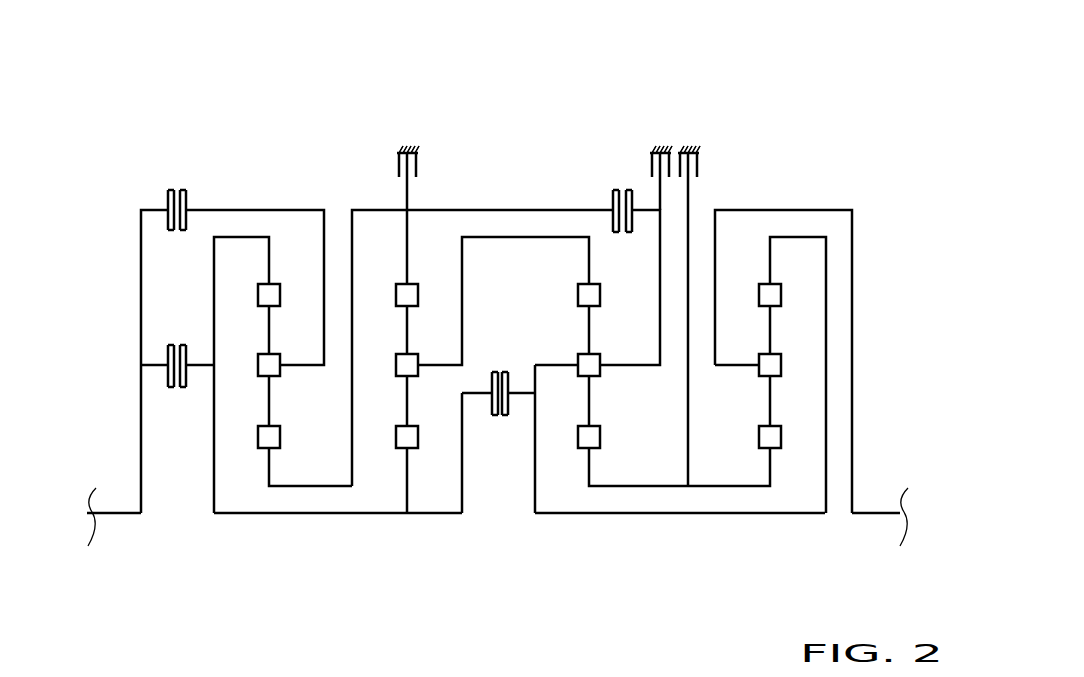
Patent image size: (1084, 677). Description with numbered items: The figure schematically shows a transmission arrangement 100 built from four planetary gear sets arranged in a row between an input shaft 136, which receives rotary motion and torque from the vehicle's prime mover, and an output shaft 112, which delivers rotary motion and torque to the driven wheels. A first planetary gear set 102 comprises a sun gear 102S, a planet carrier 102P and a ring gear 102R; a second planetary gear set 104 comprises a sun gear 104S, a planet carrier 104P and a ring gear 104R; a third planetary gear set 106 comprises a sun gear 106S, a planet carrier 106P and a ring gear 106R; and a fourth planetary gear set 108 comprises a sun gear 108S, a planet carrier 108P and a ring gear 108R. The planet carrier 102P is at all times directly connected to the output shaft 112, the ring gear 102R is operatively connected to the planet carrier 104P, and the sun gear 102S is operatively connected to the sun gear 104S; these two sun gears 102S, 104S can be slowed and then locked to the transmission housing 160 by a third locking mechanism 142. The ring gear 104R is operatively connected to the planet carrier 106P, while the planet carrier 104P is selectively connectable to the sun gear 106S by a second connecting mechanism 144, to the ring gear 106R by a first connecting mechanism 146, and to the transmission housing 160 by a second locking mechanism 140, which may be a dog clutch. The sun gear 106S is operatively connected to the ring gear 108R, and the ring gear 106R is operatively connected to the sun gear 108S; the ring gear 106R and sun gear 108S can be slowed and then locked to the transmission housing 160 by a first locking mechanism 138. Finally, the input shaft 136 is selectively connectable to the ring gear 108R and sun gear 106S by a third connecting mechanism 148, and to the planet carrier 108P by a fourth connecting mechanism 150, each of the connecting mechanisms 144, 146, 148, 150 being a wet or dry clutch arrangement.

The transmission arrangement 100 is at (502, 318).
The first planetary gear set 102 is at (825, 361).
The ring gear 102R is at (782, 296).
The planet carrier 102P is at (782, 370).
The sun gear 102S is at (782, 438).
The second planetary gear set 104 is at (665, 384).
The ring gear 104R is at (578, 295).
The planet carrier 104P is at (578, 366).
The sun gear 104S is at (600, 440).
The third planetary gear set 106 is at (413, 368).
The ring gear 106R is at (418, 296).
The planet carrier 106P is at (396, 366).
The sun gear 106S is at (418, 440).
The fourth planetary gear set 108 is at (205, 382).
The ring gear 108R is at (258, 296).
The planet carrier 108P is at (258, 366).
The sun gear 108S is at (281, 440).
The output shaft 112 is at (875, 514).
The input shaft 136 is at (120, 514).
The first locking mechanism 138 is at (418, 162).
The second locking mechanism 140 is at (648, 160).
The third locking mechanism 142 is at (700, 160).
The second connecting mechanism 144 is at (510, 437).
The first connecting mechanism 146 is at (609, 172).
The third connecting mechanism 148 is at (187, 412).
The fourth connecting mechanism 150 is at (149, 179).
The transmission housing 160 is at (408, 146).